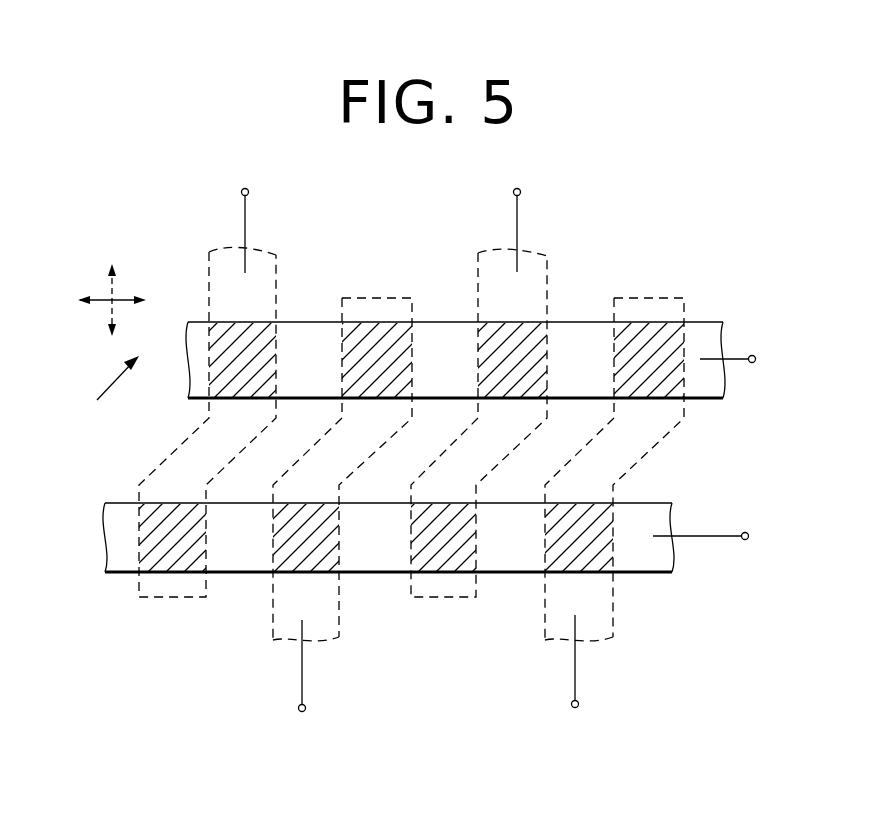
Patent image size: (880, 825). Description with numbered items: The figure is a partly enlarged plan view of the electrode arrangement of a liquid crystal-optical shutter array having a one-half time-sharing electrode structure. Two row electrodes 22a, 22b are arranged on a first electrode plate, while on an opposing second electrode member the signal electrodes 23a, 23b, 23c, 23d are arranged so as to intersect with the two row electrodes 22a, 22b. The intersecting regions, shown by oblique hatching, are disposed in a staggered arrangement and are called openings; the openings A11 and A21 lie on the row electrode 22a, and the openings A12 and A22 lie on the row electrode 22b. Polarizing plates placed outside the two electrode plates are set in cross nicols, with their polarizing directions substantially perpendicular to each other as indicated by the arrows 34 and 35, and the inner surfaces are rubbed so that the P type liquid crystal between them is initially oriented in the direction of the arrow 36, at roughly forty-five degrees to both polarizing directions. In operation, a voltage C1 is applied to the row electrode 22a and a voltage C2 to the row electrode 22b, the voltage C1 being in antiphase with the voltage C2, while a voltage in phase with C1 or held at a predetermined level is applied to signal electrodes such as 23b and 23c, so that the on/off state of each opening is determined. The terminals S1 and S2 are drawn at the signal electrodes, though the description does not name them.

The arrow 34 is at (124, 299).
The arrow 35 is at (112, 287).
The arrow 36 is at (110, 383).
The row electrode 22a is at (574, 321).
The row electrode 22b is at (637, 512).
The signal electrode 23a is at (612, 632).
The signal electrode 23b is at (440, 597).
The signal electrode 23c is at (339, 631).
The signal electrode 23d is at (167, 597).
The opening A11 is at (485, 340).
The opening A12 is at (410, 515).
The opening A21 is at (347, 340).
The opening A22 is at (277, 515).
The voltage C1 is at (742, 360).
The voltage C2 is at (714, 537).
The signal terminal S1 is at (518, 218).
The signal terminal S2 is at (303, 680).